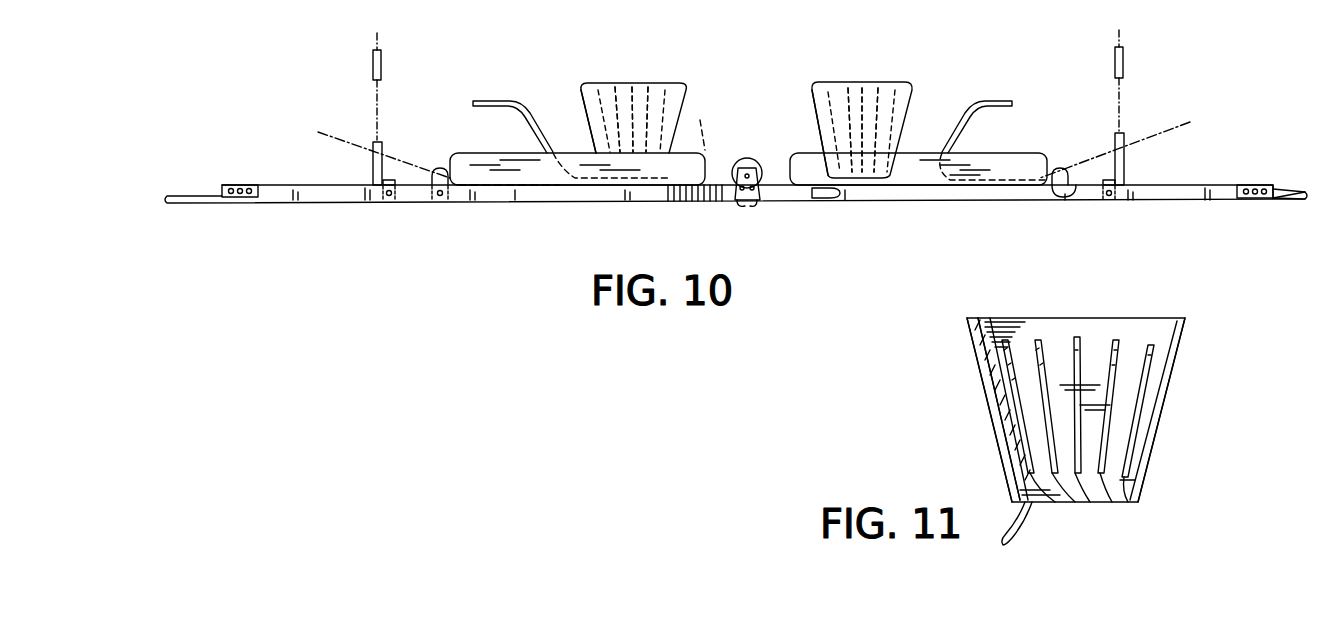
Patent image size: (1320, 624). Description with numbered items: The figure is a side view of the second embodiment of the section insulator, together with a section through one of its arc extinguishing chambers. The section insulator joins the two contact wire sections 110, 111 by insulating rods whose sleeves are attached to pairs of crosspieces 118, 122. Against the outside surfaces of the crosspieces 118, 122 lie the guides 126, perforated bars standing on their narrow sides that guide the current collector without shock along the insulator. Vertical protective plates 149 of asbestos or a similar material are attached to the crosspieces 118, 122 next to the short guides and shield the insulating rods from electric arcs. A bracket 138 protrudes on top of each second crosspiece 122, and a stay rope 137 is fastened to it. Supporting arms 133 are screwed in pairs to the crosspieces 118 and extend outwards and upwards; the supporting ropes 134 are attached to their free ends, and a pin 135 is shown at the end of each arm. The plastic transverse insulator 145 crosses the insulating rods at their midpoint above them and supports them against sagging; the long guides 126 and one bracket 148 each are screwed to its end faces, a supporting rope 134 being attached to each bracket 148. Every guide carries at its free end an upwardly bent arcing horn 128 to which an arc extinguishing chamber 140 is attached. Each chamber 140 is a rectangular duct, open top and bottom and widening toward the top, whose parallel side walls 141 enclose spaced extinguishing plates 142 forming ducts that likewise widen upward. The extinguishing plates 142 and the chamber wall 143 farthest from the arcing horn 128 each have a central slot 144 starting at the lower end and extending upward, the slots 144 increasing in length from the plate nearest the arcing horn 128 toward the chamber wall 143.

In FIG. 10, the contact wire section 110 is at (195, 180).
In FIG. 10, the contact wire section 111 is at (1270, 212).
In FIG. 10, the crosspiece 118 is at (390, 180).
In FIG. 10, the crosspiece 122 is at (450, 183).
In FIG. 10, the guide 126 is at (285, 178).
In FIG. 10, the arcing horn 128 is at (502, 87).
In FIG. 11, the arcing horn 128 is at (1000, 413).
In FIG. 10, the supporting arm 133 is at (372, 167).
In FIG. 10, the supporting rope 134 is at (372, 111).
In FIG. 10, the pin 135 is at (382, 62).
In FIG. 10, the stay rope 137 is at (322, 143).
In FIG. 10, the bracket 138 is at (440, 168).
In FIG. 10, the arc extinguishing chamber 140 is at (697, 79).
In FIG. 11, the arc extinguishing chamber 140 is at (1206, 346).
In FIG. 10, the side wall 141 is at (592, 93).
In FIG. 11, the side wall 141 is at (1048, 520).
In FIG. 10, the extinguishing plate 142 is at (645, 86).
In FIG. 11, the extinguishing plate 142 is at (1150, 345).
In FIG. 11, the chamber wall 143 is at (1162, 424).
In FIG. 11, the slot 144 is at (1078, 502).
In FIG. 10, the transverse insulator 145 is at (758, 163).
In FIG. 10, the bracket 148 is at (748, 205).
In FIG. 10, the protective plate 149 is at (520, 148).